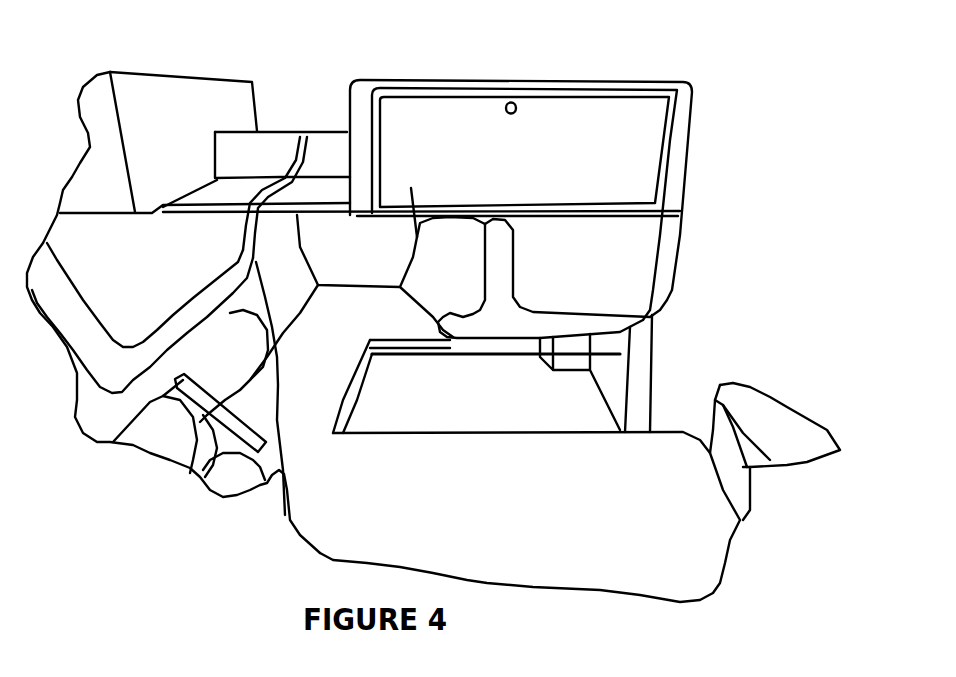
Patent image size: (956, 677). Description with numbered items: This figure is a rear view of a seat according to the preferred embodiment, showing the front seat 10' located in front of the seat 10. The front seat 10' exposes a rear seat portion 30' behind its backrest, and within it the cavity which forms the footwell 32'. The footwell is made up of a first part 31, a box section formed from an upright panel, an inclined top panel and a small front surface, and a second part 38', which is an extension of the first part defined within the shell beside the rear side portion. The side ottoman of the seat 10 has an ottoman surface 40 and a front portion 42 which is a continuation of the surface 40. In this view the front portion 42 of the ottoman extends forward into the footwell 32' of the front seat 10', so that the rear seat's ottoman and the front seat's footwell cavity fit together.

The seat 10 is at (788, 421).
The front seat 10' is at (613, 197).
The rear seat portion 30' is at (581, 256).
The first part of footwell cavity 31 is at (397, 248).
The footwell 32' is at (491, 219).
The second part of footwell 38' is at (287, 137).
The ottoman surface 40 is at (320, 357).
The front portion of ottoman 42 is at (407, 332).